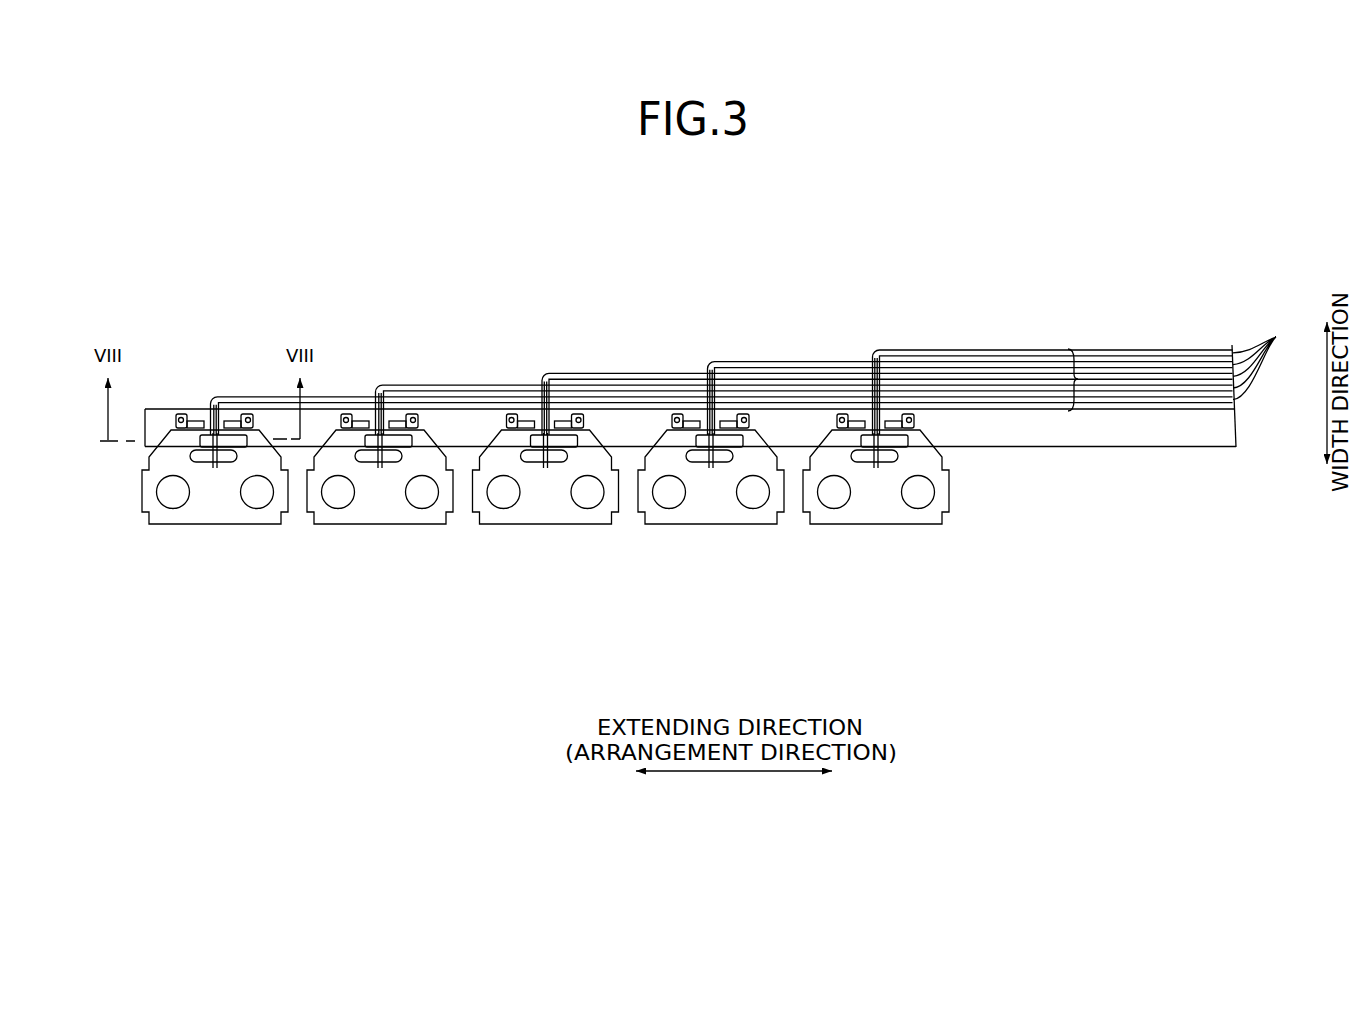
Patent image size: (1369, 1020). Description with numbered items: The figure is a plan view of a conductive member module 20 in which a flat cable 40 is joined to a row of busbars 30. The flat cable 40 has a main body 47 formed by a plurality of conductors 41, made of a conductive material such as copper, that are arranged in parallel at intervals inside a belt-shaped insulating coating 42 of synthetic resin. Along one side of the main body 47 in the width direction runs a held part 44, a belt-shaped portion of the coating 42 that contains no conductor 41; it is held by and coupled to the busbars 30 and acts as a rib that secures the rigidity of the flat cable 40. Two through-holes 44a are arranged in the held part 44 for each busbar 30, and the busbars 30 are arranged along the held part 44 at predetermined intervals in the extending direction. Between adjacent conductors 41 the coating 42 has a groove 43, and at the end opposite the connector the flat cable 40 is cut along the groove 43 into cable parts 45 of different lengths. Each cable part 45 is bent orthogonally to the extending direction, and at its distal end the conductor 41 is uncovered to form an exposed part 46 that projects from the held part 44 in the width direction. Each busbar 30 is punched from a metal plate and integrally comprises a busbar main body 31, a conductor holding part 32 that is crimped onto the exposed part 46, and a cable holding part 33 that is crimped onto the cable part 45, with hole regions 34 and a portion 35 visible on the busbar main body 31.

The bus bar module 20 is at (333, 243).
The busbar 30 is at (82, 497).
The busbar main body 31 is at (163, 528).
The conductor holding part 32 is at (193, 442).
The cable holding part 33 is at (182, 438).
The through hole 34 is at (177, 505).
The press-fit portion 35 is at (204, 463).
The flat cable 40 is at (1040, 323).
The conductor 41 is at (214, 474).
The insulating coating 42 is at (1178, 345).
The groove 43 is at (1268, 364).
The held part 44 is at (1238, 431).
The through-hole 44a is at (249, 417).
The cable part 45 is at (225, 438).
The exposed part 46 is at (225, 463).
The main body 47 is at (1079, 379).